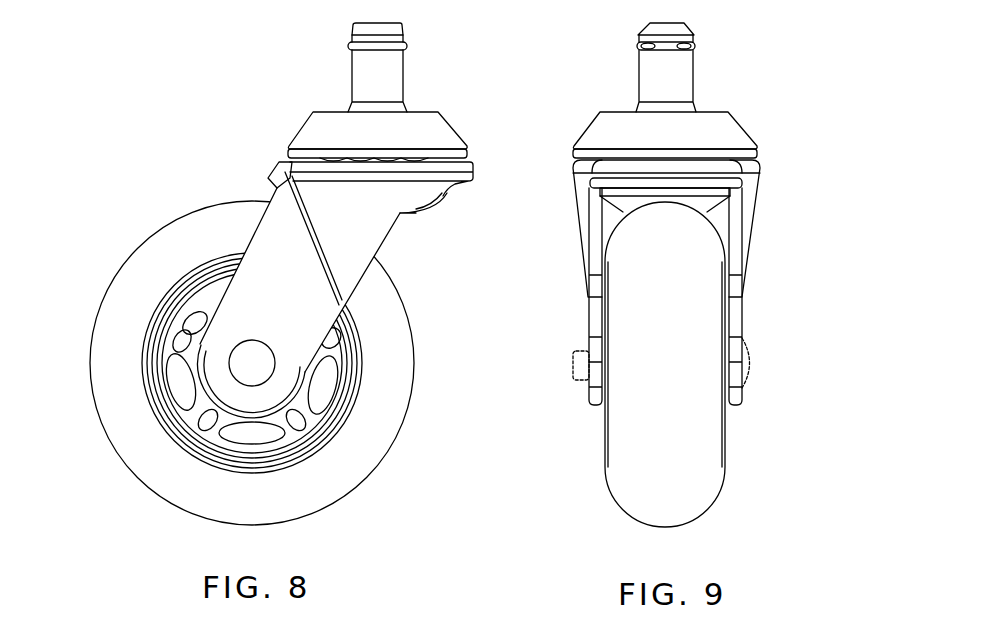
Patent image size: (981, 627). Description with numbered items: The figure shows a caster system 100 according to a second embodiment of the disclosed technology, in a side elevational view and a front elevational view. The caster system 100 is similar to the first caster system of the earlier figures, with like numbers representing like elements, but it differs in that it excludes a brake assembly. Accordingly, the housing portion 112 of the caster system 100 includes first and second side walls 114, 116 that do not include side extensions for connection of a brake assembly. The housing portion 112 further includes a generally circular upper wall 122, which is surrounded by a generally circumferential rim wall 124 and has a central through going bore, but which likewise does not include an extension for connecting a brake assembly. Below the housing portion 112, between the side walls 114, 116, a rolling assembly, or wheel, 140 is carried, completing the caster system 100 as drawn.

In FIG. 8, the caster system 100 is at (239, 107).
In FIG. 9, the caster system 100 is at (755, 88).
In FIG. 8, the housing portion 112 is at (406, 243).
In FIG. 9, the housing portion 112 is at (577, 253).
In FIG. 9, the first side wall 114 is at (597, 320).
In FIG. 8, the second side wall 116 is at (288, 285).
In FIG. 9, the second side wall 116 is at (736, 326).
In FIG. 8, the upper wall 122 is at (471, 159).
In FIG. 9, the upper wall 122 is at (665, 153).
In FIG. 8, the rim wall 124 is at (430, 184).
In FIG. 8, the wheel 140 is at (82, 336).
In FIG. 9, the wheel 140 is at (590, 444).